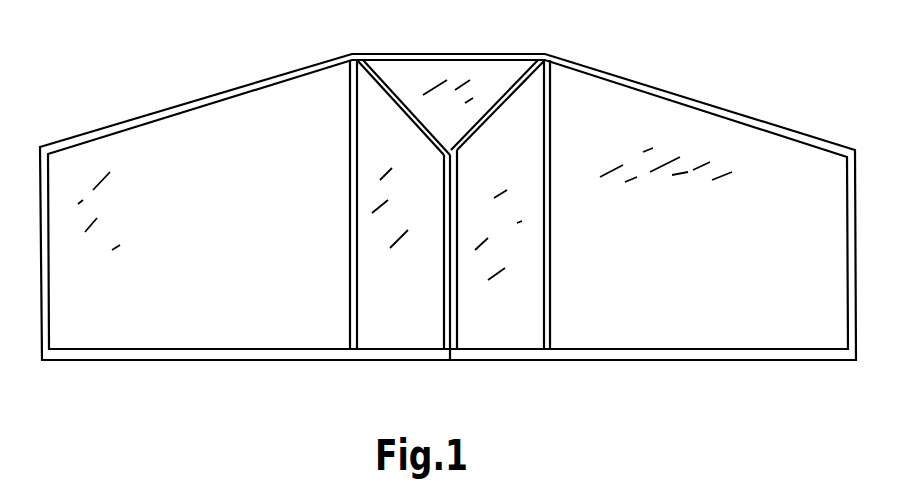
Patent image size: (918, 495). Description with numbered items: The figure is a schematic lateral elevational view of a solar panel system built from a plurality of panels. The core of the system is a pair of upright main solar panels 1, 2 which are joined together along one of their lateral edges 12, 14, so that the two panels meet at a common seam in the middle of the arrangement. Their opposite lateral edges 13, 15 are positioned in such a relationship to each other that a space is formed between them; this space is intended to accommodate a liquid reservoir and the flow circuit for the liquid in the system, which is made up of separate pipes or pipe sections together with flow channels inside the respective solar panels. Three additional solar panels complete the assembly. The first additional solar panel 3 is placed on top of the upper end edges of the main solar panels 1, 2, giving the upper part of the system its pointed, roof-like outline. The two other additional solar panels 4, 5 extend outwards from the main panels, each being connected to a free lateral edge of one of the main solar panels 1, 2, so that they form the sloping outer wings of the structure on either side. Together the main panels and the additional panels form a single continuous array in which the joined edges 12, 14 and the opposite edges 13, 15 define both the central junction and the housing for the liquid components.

The main solar panel 1 is at (402, 294).
The main solar panel 2 is at (512, 176).
The additional solar panel 3 is at (462, 121).
The additional solar panel 4 is at (212, 270).
The additional solar panel 5 is at (680, 270).
The lateral edge 12 is at (444, 182).
The lateral edge 13 is at (350, 186).
The lateral edge 14 is at (453, 318).
The lateral edge 15 is at (550, 242).